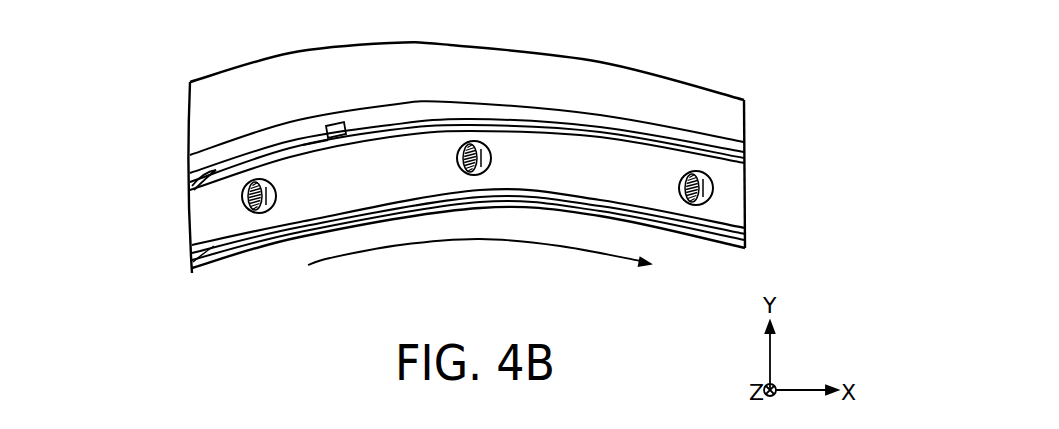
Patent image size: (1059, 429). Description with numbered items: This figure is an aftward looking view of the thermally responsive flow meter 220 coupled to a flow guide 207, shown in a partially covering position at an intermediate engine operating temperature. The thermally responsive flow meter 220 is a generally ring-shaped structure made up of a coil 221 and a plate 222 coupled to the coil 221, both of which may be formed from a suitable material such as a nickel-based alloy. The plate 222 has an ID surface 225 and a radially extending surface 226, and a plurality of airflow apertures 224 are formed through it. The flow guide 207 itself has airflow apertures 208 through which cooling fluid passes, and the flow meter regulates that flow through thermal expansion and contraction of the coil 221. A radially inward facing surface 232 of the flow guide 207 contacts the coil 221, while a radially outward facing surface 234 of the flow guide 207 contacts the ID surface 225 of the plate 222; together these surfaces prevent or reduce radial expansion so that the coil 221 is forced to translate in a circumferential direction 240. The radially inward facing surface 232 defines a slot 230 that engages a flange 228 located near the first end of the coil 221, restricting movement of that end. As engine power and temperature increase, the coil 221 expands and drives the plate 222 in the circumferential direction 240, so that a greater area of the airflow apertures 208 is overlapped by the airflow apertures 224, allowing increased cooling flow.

The flow guide 207 is at (508, 84).
The airflow apertures 208 is at (262, 174).
The thermally responsive flow meter 220 is at (158, 232).
The coil 221 is at (635, 137).
The plate 222 is at (638, 190).
The airflow apertures 224 is at (717, 179).
The ID surface 225 is at (208, 247).
The radially extending surface 226 is at (553, 177).
The flange 228 is at (338, 118).
The slot 230 is at (350, 116).
The radially inward facing surface 232 is at (193, 190).
The radially outward facing surface 234 is at (723, 227).
The circumferential direction 240 is at (313, 263).